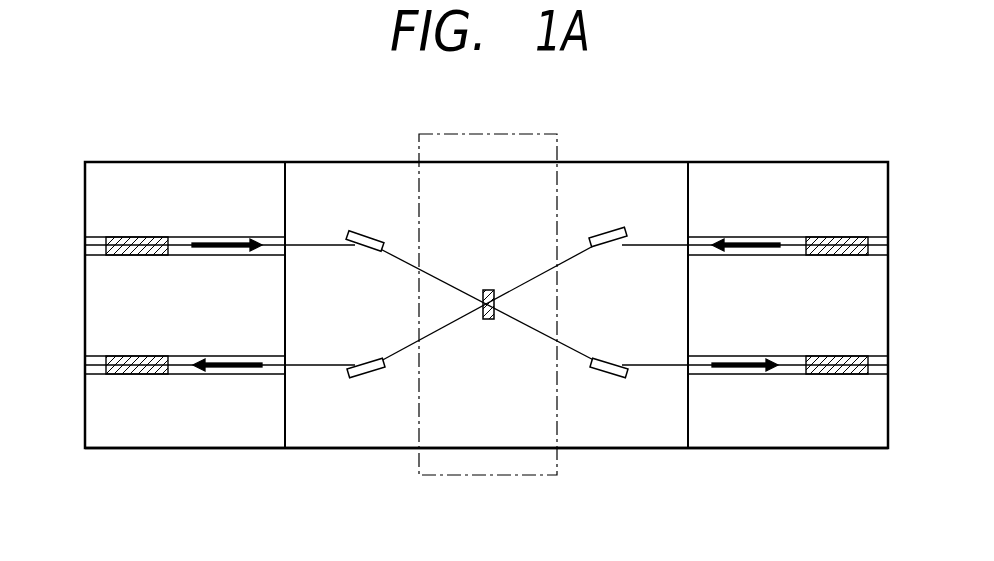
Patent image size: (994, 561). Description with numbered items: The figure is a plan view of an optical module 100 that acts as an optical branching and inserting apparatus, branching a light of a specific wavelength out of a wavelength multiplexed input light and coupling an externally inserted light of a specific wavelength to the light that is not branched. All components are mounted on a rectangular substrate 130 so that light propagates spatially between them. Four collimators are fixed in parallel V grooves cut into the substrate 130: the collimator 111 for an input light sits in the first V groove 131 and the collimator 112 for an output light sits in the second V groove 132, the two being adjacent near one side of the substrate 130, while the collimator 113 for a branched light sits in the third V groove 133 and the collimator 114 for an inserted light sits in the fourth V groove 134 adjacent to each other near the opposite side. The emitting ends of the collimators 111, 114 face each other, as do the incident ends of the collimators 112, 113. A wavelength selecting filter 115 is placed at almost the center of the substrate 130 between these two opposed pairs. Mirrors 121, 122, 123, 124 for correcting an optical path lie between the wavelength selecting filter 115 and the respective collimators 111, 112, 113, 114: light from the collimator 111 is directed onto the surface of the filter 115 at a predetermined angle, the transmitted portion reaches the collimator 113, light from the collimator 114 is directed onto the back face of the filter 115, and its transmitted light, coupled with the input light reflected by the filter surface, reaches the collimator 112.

The optical module 100 is at (728, 118).
The collimator for an input light 111 is at (147, 235).
The collimator for an output light 112 is at (147, 355).
The collimator for a branched light 113 is at (844, 355).
The collimator for an inserted light 114 is at (846, 235).
The wavelength selecting filter 115 is at (491, 290).
The mirror for correcting an optical path 121 is at (368, 232).
The mirror for correcting an optical path 122 is at (368, 377).
The mirror for correcting an optical path 123 is at (604, 378).
The mirror for correcting an optical path 124 is at (603, 230).
The substrate 130 is at (348, 448).
The first V groove 131 is at (88, 258).
The second V groove 132 is at (88, 376).
The third V groove 133 is at (771, 355).
The fourth V groove 134 is at (770, 236).